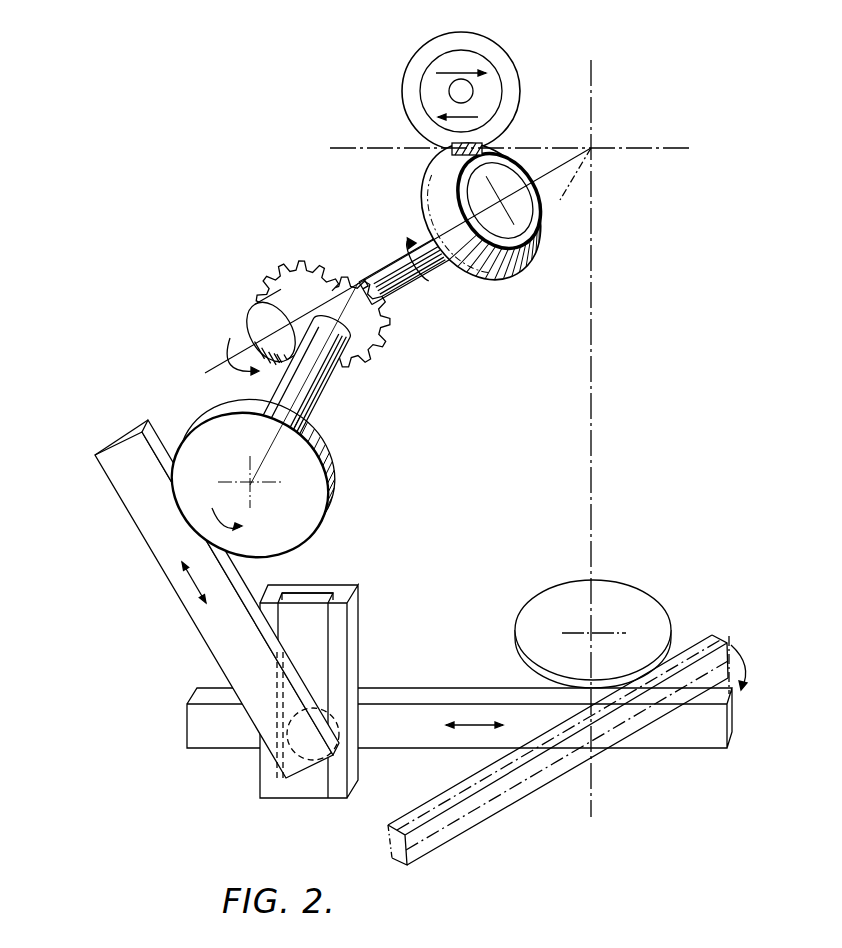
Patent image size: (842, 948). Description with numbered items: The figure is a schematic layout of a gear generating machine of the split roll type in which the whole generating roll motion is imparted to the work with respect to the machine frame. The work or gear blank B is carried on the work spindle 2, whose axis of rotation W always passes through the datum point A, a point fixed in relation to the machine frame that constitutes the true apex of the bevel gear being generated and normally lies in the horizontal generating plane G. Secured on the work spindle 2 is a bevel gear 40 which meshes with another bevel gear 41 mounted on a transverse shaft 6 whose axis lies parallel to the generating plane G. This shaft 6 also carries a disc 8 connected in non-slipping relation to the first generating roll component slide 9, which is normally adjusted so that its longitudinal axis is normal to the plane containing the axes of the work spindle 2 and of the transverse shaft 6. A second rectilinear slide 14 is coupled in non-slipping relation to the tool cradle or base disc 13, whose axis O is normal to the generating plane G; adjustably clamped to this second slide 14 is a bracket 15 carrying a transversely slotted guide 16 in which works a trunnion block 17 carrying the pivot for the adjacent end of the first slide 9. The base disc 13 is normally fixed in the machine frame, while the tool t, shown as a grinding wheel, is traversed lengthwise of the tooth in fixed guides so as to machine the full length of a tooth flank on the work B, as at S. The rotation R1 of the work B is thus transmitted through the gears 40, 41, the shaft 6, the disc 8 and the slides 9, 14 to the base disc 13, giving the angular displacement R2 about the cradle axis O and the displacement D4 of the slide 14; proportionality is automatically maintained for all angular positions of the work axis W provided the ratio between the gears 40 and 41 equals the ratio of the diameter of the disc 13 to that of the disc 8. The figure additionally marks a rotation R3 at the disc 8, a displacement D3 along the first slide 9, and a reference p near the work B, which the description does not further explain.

The work spindle 2 is at (396, 238).
The transverse shaft 6 is at (322, 397).
The disc 8 is at (331, 468).
The first slide 9 is at (200, 620).
The base disc 13 is at (547, 600).
The second slide 14 is at (468, 788).
The bracket 15 is at (357, 657).
The slotted guide 16 is at (314, 605).
The trunnion block 17 is at (318, 706).
The bevel gear 40 is at (277, 276).
The bevel gear 41 is at (388, 332).
The tool t is at (497, 52).
The tooth flank machining location S is at (445, 147).
The rim p is at (425, 185).
The work B is at (514, 276).
The datum point A is at (593, 146).
The generating plane G is at (500, 171).
The tool cradle axis O is at (603, 437).
The work axis W is at (458, 607).
The rotation of the work R1 is at (425, 271).
The cradle rotation R2 is at (484, 504).
The rotation R3 is at (241, 526).
The displacement D3 is at (208, 596).
The displacement of the second slide D4 is at (463, 732).